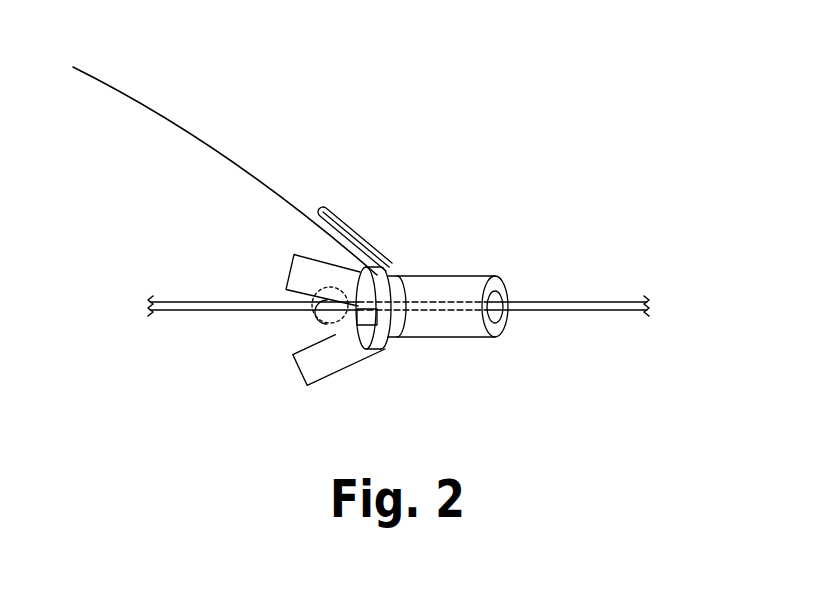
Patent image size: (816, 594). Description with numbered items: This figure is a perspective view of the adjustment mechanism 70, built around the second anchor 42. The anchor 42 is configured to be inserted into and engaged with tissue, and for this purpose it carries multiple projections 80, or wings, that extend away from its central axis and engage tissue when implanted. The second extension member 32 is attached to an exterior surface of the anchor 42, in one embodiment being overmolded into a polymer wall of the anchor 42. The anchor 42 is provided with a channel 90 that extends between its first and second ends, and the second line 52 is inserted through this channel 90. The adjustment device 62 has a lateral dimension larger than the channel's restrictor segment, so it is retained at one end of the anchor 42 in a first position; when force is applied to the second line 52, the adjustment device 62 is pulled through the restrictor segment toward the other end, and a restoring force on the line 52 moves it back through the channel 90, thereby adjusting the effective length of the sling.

The second extension member 32 is at (150, 99).
The adjustment mechanism 70 is at (512, 58).
The second line 52 is at (197, 300).
The second anchor 42 is at (463, 274).
The channel 90 is at (497, 317).
The projection 80 is at (295, 272).
The adjustment device 62 is at (314, 312).